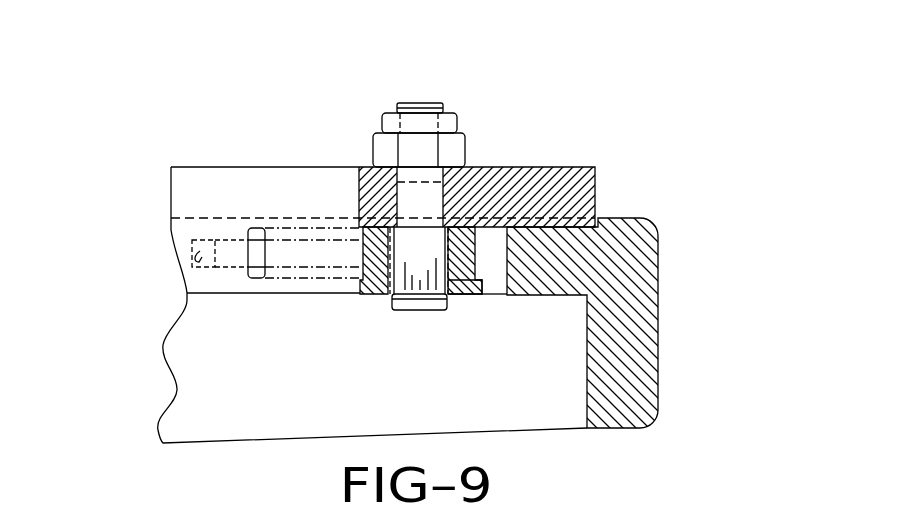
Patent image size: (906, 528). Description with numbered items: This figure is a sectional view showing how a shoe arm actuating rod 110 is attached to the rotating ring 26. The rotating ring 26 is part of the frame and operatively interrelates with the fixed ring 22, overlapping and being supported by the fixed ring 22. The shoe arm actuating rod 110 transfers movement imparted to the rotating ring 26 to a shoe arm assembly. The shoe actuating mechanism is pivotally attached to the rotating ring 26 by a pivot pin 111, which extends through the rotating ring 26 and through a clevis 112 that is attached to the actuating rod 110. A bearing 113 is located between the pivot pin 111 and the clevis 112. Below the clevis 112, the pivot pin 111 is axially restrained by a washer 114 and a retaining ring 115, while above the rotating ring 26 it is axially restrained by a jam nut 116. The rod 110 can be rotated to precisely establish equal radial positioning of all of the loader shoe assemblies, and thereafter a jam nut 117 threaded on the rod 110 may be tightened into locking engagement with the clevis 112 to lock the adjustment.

The fixed ring 22 is at (635, 310).
The rotating ring 26 is at (560, 190).
The shoe arm actuating rod 110 is at (208, 248).
The pivot pin 111 is at (420, 205).
The clevis 112 is at (302, 232).
The bearing 113 is at (455, 257).
The washer 114 is at (460, 288).
The retaining ring 115 is at (390, 294).
The jam nut 116 is at (415, 150).
The jam nut 117 is at (258, 272).